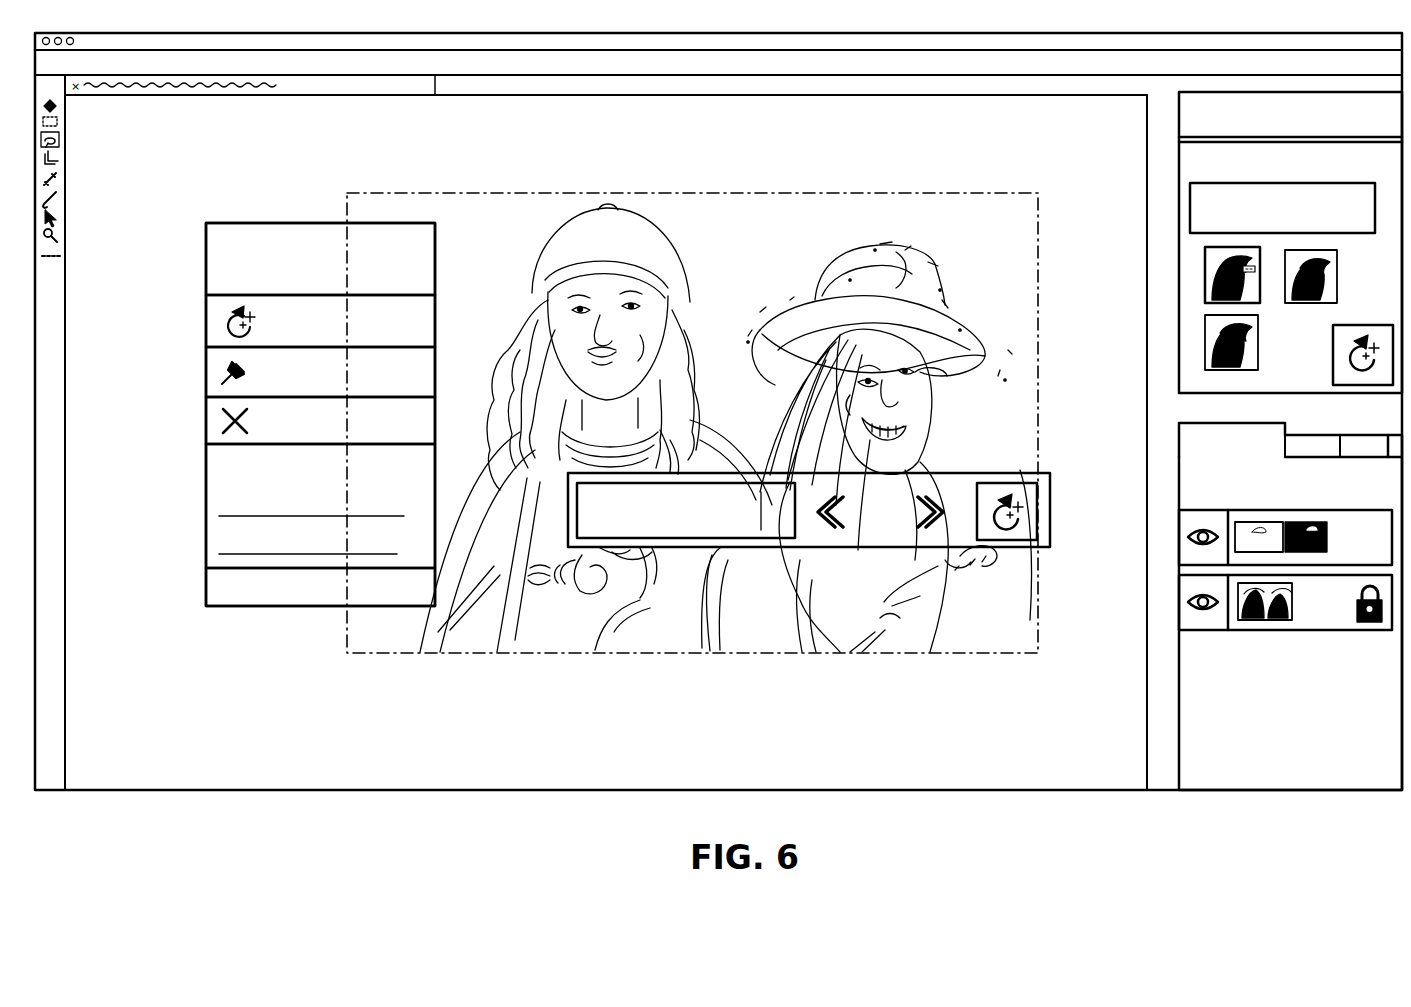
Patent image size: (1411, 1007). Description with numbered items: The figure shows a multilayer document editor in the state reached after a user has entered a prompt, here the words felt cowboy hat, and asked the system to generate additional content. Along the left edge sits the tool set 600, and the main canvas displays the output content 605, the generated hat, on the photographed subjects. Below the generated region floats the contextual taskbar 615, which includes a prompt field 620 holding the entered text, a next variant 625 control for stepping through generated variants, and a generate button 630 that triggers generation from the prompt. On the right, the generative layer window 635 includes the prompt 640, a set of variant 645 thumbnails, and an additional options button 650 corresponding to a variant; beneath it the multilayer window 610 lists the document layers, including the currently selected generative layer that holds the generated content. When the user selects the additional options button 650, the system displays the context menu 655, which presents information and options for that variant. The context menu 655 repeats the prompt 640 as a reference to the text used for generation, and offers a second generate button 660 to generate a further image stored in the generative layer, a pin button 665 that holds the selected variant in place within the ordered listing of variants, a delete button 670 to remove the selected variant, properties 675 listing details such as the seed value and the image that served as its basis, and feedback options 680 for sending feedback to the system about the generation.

The tool set 600 is at (77, 100).
The output content 605 is at (820, 270).
The multilayer window 610 is at (1185, 463).
The contextual taskbar 615 is at (547, 606).
The prompt field 620 is at (829, 490).
The next variant 625 is at (926, 530).
The generate button 630 is at (1005, 541).
The generative layer window 635 is at (1177, 112).
The prompt 640 is at (206, 263).
The variant 645 is at (1205, 360).
The additional options button 650 is at (1205, 276).
The context menu 655 is at (244, 223).
The second generate button 660 is at (206, 319).
The pin button 665 is at (206, 367).
The delete button 670 is at (206, 417).
The properties 675 is at (206, 507).
The feedback options 680 is at (206, 588).